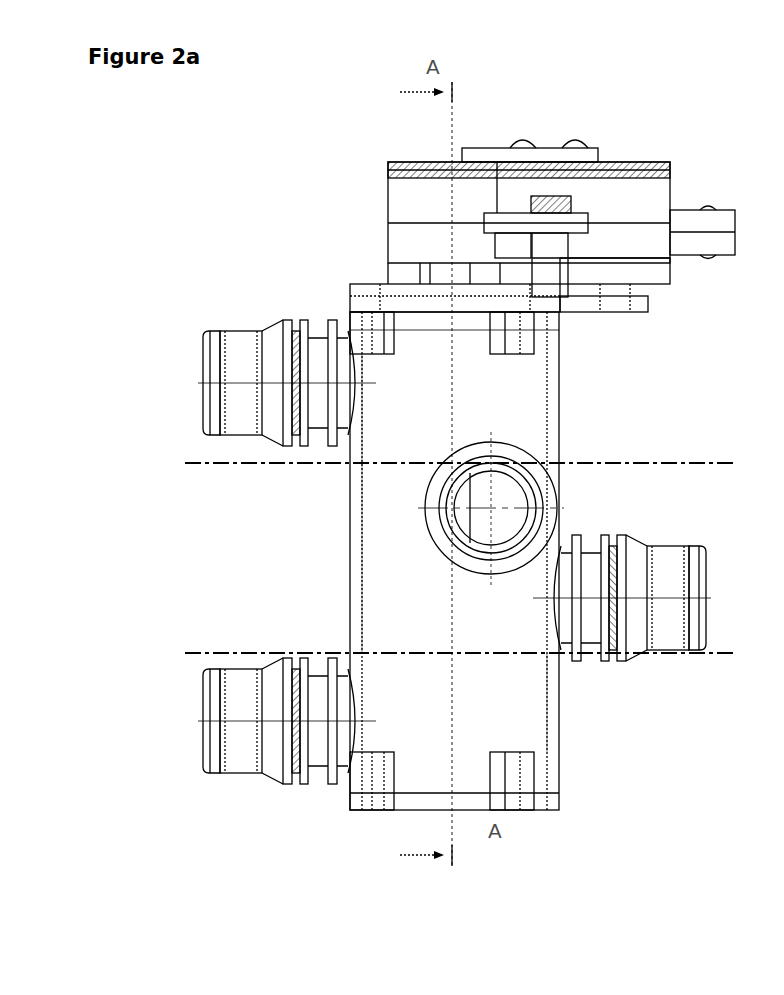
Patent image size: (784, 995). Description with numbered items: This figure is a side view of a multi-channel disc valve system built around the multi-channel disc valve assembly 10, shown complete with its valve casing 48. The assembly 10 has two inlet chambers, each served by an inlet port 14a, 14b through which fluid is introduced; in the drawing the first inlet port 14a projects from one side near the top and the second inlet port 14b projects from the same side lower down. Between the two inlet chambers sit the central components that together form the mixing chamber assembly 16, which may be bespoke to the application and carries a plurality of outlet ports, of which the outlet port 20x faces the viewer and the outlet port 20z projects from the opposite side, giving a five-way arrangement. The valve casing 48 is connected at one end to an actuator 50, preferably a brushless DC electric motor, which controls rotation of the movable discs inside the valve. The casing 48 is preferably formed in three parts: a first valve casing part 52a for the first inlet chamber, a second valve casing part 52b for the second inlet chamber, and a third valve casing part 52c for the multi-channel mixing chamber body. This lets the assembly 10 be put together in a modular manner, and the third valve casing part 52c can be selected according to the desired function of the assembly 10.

The multi-channel disc valve assembly 10 is at (630, 96).
The inlet port 14a is at (235, 333).
The inlet port 14b is at (240, 775).
The mixing chamber assembly 16 is at (318, 518).
The outlet port 20x is at (520, 448).
The outlet port 20z is at (690, 546).
The valve casing 48 is at (332, 275).
The actuator 50 is at (398, 160).
The first valve casing part 52a is at (520, 386).
The second valve casing part 52b is at (545, 727).
The third valve casing part 52c is at (408, 584).